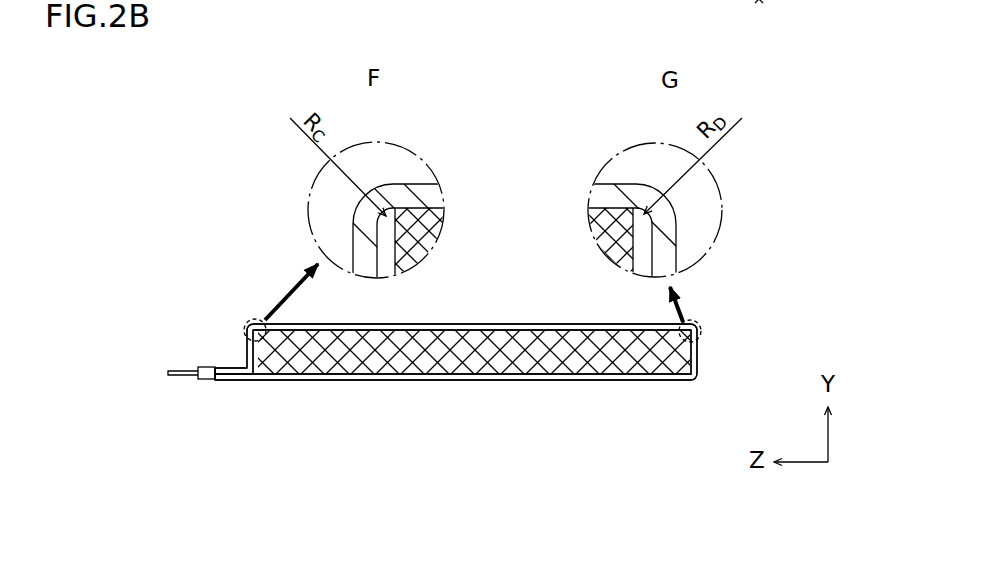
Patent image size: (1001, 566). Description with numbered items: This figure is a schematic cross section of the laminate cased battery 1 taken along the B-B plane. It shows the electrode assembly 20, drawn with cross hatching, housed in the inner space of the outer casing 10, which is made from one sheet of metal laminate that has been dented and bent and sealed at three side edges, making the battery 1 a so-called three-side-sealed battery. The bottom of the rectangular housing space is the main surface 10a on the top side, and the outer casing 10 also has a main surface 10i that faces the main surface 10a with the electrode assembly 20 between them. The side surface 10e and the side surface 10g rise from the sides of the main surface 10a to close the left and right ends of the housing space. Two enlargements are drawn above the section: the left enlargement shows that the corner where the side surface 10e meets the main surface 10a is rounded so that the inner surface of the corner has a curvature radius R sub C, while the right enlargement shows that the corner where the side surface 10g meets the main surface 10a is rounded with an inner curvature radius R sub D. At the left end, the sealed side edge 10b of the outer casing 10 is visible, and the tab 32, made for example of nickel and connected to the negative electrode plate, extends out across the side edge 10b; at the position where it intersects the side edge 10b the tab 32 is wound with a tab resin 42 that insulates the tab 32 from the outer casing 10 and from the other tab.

The laminate cased battery 1 is at (204, 160).
The outer casing 10 is at (522, 325).
The main surface 10a is at (404, 324).
The side edge 10b is at (226, 366).
The side surface 10e is at (245, 347).
The side surface 10g is at (699, 351).
The main surface 10i is at (463, 382).
The electrode assembly 20 is at (340, 353).
The tab 32 is at (183, 377).
The tab resin 42 is at (205, 381).